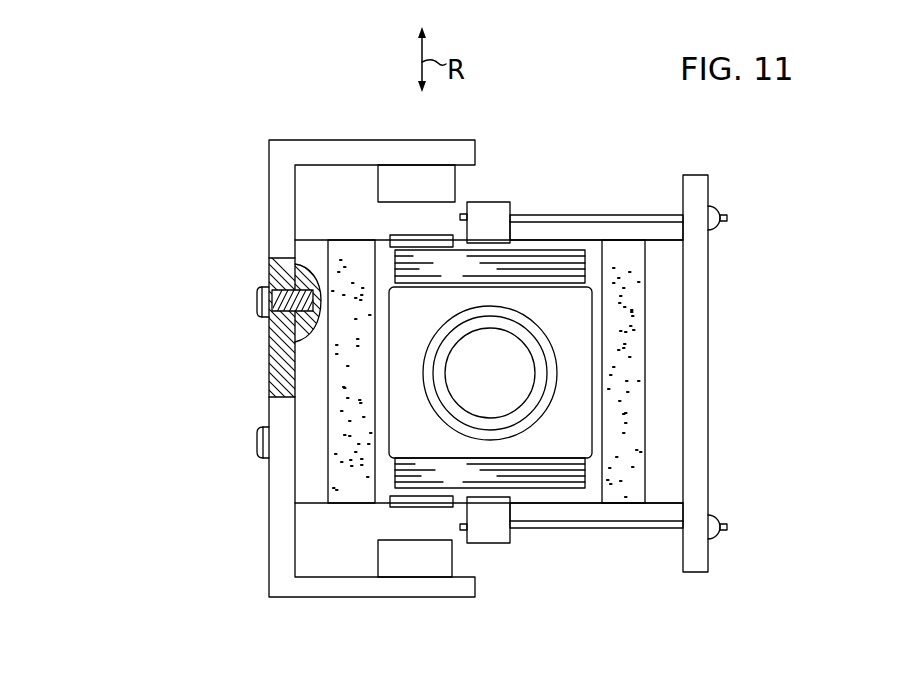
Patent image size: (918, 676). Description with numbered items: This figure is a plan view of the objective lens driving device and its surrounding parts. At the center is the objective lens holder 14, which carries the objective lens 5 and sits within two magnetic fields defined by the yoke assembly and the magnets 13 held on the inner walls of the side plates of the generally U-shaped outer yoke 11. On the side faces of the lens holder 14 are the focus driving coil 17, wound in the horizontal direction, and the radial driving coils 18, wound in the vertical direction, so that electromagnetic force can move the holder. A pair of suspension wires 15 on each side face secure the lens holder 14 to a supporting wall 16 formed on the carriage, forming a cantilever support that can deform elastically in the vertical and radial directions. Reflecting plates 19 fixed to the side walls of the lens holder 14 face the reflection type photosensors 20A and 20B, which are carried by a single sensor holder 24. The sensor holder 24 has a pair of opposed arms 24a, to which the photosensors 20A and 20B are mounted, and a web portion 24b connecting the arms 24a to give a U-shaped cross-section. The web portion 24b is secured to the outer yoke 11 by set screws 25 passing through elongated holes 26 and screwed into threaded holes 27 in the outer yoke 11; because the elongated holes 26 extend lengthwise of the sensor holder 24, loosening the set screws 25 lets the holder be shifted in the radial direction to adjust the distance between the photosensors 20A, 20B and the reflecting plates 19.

The objective lens 5 is at (553, 303).
The outer yoke 11 is at (672, 392).
The magnets 13 is at (633, 320).
The objective lens holder 14 is at (583, 250).
The suspension wires 15 is at (647, 530).
The supporting wall 16 is at (702, 463).
The focus driving coil 17 is at (388, 438).
The radial driving coils 18 is at (517, 317).
The reflecting plates 19 is at (417, 242).
The reflection type photosensor 20A is at (437, 556).
The reflection type photosensor 20B is at (443, 185).
The sensor holder 24 is at (278, 505).
The arms 24a is at (456, 148).
The web portion 24b is at (268, 487).
The set screws 25 is at (257, 311).
The elongated holes 26 is at (287, 290).
The threaded holes 27 is at (268, 325).